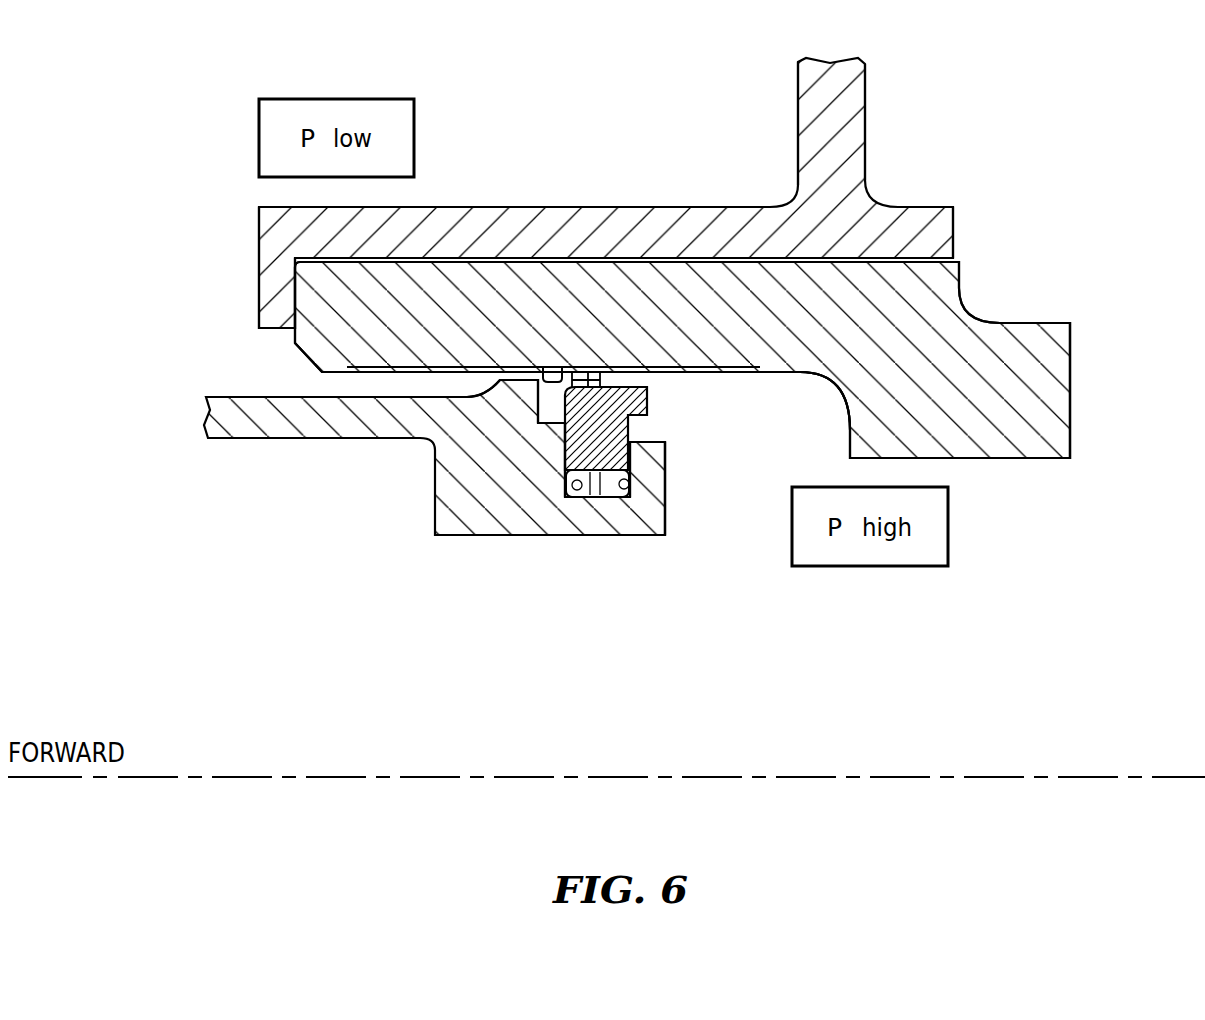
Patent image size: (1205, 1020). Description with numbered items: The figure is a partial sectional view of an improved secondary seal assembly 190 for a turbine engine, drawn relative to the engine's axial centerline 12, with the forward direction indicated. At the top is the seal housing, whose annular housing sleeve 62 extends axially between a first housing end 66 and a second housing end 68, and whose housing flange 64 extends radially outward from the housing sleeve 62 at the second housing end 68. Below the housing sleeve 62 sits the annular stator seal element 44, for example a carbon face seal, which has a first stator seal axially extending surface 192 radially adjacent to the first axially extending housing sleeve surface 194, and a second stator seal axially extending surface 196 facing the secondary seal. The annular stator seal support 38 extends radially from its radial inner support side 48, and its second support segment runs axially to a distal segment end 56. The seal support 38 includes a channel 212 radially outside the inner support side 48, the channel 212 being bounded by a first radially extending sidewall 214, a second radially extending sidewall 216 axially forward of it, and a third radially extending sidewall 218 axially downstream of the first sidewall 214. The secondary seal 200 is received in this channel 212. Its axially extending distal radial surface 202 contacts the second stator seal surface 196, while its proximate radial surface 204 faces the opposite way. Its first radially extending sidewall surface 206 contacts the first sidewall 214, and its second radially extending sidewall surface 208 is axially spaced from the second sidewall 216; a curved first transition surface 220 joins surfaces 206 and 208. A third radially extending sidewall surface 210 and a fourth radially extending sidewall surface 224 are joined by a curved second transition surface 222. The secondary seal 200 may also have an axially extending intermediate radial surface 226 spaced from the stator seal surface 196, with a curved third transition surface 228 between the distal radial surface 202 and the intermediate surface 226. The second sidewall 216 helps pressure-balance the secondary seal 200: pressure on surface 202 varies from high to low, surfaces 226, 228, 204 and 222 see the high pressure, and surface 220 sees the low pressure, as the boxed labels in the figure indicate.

The axial centerline 12 is at (1200, 792).
The stator seal support 38 is at (280, 440).
The stator seal element 44 is at (1048, 458).
The radial inner support side 48 is at (458, 536).
The distal segment end 56 is at (670, 512).
The housing sleeve 62 is at (440, 212).
The housing flange 64 is at (798, 108).
The first housing end 66 is at (259, 278).
The second housing end 68 is at (953, 240).
The secondary seal assembly 190 is at (1057, 111).
The first stator seal axially extending surface 192 is at (856, 262).
The first axially extending housing sleeve surface 194 is at (722, 255).
The second stator seal axially extending surface 196 is at (730, 378).
The secondary seal 200 is at (600, 497).
The axially extending distal radial surface 202 is at (576, 385).
The proximate radial surface 204 is at (588, 497).
The first radially extending secondary seal sidewall surface 206 is at (560, 468).
The second radially extending secondary seal sidewall surface 208 is at (528, 365).
The third radially extending secondary seal sidewall surface 210 is at (634, 437).
The channel 212 is at (625, 497).
The first radially extending sidewall 214 is at (575, 492).
The second radially extending sidewall 216 is at (543, 433).
The third radially extending sidewall 218 is at (648, 486).
The first transition surface 220 is at (552, 370).
The second transition surface 222 is at (634, 390).
The fourth radially extending secondary seal sidewall surface 224 is at (652, 392).
The axially extending intermediate radial surface 226 is at (612, 386).
The third transition surface 228 is at (580, 372).